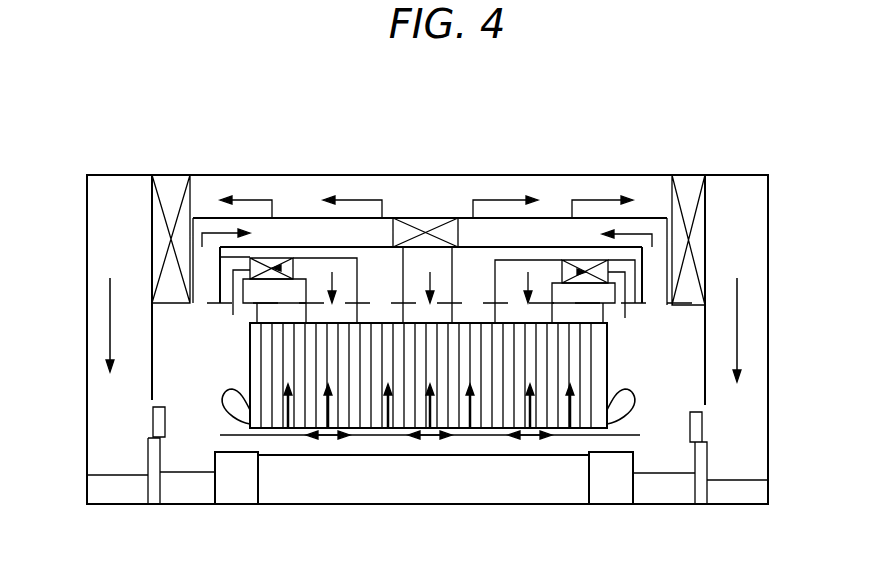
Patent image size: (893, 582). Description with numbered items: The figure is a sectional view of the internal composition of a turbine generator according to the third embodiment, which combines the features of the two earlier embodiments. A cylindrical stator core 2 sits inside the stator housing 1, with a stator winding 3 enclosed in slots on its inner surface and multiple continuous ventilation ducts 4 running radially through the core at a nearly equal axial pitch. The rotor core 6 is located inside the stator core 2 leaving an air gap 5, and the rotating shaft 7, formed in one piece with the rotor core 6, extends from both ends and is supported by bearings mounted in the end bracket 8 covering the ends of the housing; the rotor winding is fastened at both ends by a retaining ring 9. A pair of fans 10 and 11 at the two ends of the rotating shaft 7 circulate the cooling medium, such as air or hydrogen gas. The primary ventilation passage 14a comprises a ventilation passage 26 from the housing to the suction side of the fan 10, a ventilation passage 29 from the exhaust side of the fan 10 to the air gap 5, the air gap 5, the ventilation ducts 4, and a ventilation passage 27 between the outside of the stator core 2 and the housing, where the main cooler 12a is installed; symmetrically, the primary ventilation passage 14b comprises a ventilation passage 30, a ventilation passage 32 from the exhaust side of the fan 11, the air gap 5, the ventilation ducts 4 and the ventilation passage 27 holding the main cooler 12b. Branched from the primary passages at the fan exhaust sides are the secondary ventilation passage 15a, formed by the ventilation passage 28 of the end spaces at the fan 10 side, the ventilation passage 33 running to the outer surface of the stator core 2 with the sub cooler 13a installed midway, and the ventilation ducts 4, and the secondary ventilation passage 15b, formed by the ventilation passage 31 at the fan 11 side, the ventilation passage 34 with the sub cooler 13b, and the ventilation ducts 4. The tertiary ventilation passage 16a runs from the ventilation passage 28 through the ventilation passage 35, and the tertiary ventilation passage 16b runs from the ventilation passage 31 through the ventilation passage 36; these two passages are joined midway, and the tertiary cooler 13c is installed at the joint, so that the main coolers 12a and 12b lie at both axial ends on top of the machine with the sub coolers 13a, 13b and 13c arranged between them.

The stator housing 1 is at (445, 195).
The stator core 2 is at (345, 327).
The stator winding 3 is at (222, 398).
The ventilation ducts 4 is at (428, 447).
The air gap 5 is at (295, 443).
The rotor core 6 is at (352, 242).
The rotating shaft 7 is at (123, 493).
The end bracket 8 is at (88, 190).
The retaining ring 9 is at (237, 480).
The fan 10 is at (152, 430).
The fan 11 is at (703, 432).
The main cooler 12a is at (168, 195).
The main cooler 12b is at (692, 197).
The sub cooler 13a is at (280, 258).
The sub cooler 13b is at (587, 255).
The tertiary cooler 13c is at (458, 220).
The primary ventilation passage 14a is at (100, 235).
The primary ventilation passage 14b is at (740, 237).
The secondary ventilation passage 15a is at (213, 297).
The secondary ventilation passage 15b is at (640, 300).
The tertiary ventilation passage 16a is at (207, 271).
The tertiary ventilation passage 16b is at (640, 275).
The ventilation passage 26 is at (112, 414).
The ventilation passage 27 is at (380, 212).
The ventilation passage 28 is at (150, 331).
The ventilation passage 29 is at (182, 460).
The ventilation passage 30 is at (747, 353).
The ventilation passage 31 is at (693, 327).
The ventilation passage 32 is at (668, 452).
The ventilation passage 33 is at (247, 258).
The ventilation passage 34 is at (545, 247).
The ventilation passage 35 is at (207, 222).
The ventilation passage 36 is at (517, 237).